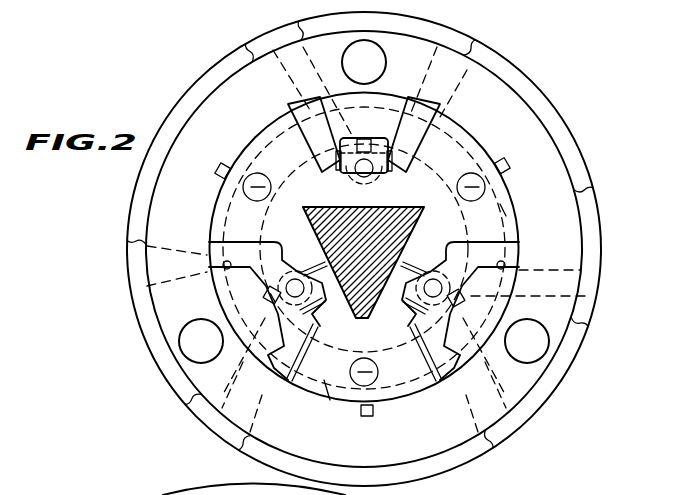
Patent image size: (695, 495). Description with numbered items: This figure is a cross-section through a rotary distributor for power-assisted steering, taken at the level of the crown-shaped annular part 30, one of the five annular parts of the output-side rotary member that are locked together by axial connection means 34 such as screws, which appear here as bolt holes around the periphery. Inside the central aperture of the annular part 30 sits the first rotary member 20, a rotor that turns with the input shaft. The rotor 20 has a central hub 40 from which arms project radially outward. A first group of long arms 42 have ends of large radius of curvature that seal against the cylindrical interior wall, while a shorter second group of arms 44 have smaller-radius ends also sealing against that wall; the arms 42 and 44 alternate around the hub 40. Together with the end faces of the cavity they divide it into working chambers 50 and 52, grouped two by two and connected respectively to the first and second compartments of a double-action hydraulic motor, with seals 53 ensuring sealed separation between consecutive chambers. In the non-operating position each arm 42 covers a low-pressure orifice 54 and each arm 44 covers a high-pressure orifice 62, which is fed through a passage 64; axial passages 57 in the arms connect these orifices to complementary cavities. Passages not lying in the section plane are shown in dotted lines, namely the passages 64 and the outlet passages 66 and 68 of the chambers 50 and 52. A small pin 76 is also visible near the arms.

The first rotary member 20 is at (455, 239).
The annular part 30 is at (520, 111).
The axial connection means 34 is at (386, 61).
The central hub 40 is at (370, 184).
The first group of arms 42 is at (473, 122).
The second group of arms 44 is at (354, 128).
The working chambers 50 is at (441, 112).
The working chambers 52 is at (516, 233).
The seals 53 is at (223, 158).
The orifice 54 is at (268, 120).
The axial passages 57 is at (262, 187).
The orifice 62 is at (390, 178).
The passage 64 is at (300, 26).
The outlet passage 66 is at (472, 55).
The outlet passage 68 is at (247, 42).
The stop pin 76 is at (282, 262).